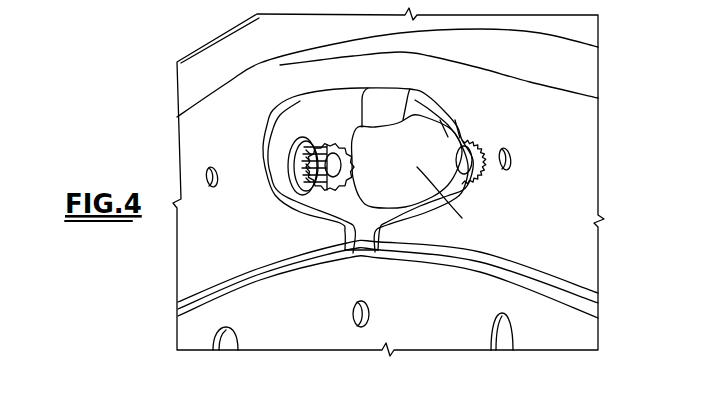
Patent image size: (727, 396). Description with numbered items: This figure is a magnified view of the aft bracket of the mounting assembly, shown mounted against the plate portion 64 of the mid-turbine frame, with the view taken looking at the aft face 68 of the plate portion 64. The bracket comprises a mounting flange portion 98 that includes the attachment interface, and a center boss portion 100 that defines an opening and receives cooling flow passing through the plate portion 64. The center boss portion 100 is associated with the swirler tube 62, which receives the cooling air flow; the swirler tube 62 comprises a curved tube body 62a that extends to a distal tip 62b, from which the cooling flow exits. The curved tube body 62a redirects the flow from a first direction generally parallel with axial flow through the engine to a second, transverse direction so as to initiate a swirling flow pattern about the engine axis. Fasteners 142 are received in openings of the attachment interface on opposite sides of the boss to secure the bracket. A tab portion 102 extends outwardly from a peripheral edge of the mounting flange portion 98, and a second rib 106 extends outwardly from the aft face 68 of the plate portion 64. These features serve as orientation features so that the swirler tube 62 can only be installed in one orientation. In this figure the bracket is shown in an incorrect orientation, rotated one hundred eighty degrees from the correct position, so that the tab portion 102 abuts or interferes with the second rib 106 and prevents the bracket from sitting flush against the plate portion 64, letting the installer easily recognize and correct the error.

The swirler tube 62 is at (403, 122).
The curved tube body 62a is at (456, 199).
The distal tip 62b is at (440, 128).
The plate portion 64 is at (215, 72).
The aft face 68 is at (222, 227).
The mounting flange portion 98 is at (315, 118).
The center boss portion 100 is at (360, 88).
The tab portion 102 is at (368, 237).
The second rib 106 is at (582, 290).
The fastener 142 is at (300, 163).